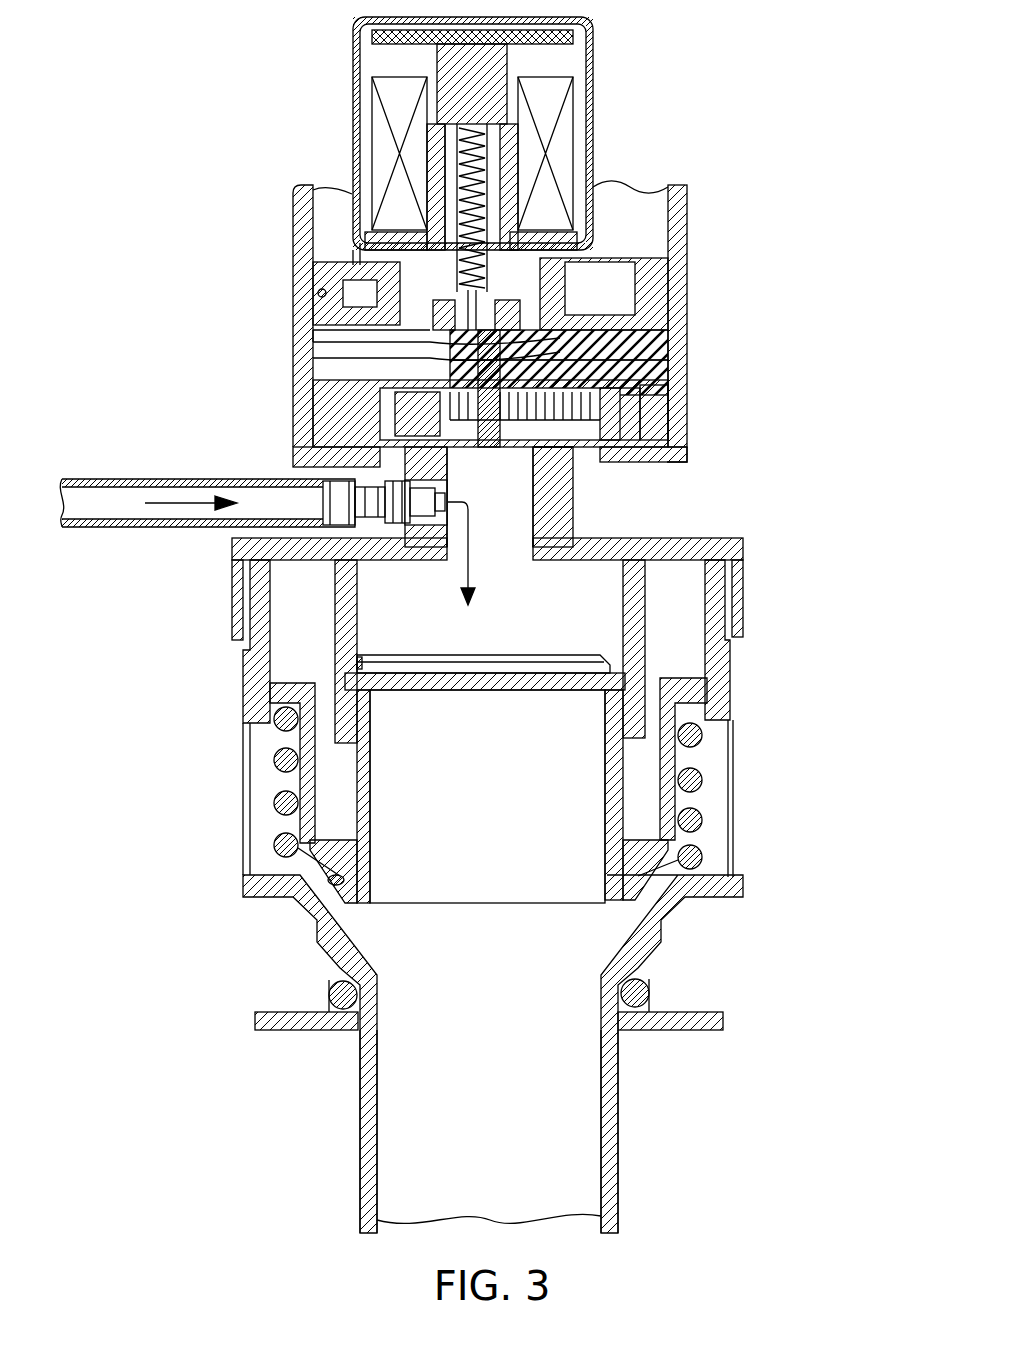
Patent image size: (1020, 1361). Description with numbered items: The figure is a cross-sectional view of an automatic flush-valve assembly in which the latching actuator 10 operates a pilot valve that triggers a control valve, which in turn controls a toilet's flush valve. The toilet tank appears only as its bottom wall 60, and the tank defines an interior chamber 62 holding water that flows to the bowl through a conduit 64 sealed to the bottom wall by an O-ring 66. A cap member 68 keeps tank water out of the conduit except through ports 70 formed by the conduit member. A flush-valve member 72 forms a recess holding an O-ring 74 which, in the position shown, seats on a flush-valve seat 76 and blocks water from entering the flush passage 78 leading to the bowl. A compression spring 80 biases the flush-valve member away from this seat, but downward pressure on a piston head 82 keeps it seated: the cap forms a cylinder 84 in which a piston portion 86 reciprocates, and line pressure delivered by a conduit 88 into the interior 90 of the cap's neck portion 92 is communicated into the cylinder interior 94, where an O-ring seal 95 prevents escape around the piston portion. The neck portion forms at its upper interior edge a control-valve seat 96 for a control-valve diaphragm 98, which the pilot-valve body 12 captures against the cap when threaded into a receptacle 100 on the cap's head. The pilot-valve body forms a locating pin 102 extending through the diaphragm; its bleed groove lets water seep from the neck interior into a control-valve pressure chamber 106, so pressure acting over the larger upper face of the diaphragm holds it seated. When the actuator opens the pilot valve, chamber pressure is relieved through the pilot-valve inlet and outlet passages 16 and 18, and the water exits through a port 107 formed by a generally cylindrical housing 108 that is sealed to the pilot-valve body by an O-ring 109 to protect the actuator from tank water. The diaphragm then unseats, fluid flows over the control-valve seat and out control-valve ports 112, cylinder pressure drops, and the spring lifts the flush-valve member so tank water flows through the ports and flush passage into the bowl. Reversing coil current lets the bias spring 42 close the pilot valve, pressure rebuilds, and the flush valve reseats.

The actuator 10 is at (651, 94).
The bias spring 42 is at (462, 160).
The cylindrical housing 108 is at (295, 203).
The O-ring 109 is at (320, 293).
The port 107 is at (295, 338).
The pilot-valve outlet passage 18 is at (420, 368).
The pilot-valve inlet passage 16 is at (565, 345).
The pilot-valve body 12 is at (640, 358).
The receptacle 100 is at (672, 388).
The conduit 88 is at (103, 482).
The control-valve ports 112 is at (360, 452).
The control-valve pressure chamber 106 is at (682, 455).
The control-valve diaphragm 98 is at (458, 452).
The control-valve seat 96 is at (490, 440).
The locating pin 102 is at (527, 460).
The neck portion 92 is at (575, 532).
The interior of neck portion 90 is at (477, 526).
The cap member 68 is at (745, 545).
The cylinder interior 94 is at (477, 631).
The piston head 82 is at (528, 672).
The O-ring seal 95 is at (358, 660).
The cylinder 84 is at (650, 680).
The compression spring 80 is at (272, 752).
The ports 70 is at (262, 800).
The piston portion 86 is at (372, 762).
The flush-valve member 72 is at (448, 900).
The O-ring 74 is at (350, 878).
The flush-valve seat 76 is at (352, 895).
The interior chamber 62 is at (709, 958).
The O-ring 66 is at (648, 992).
The bottom wall 60 is at (708, 1012).
The flush passage 78 is at (477, 1053).
The conduit 64 is at (619, 1090).